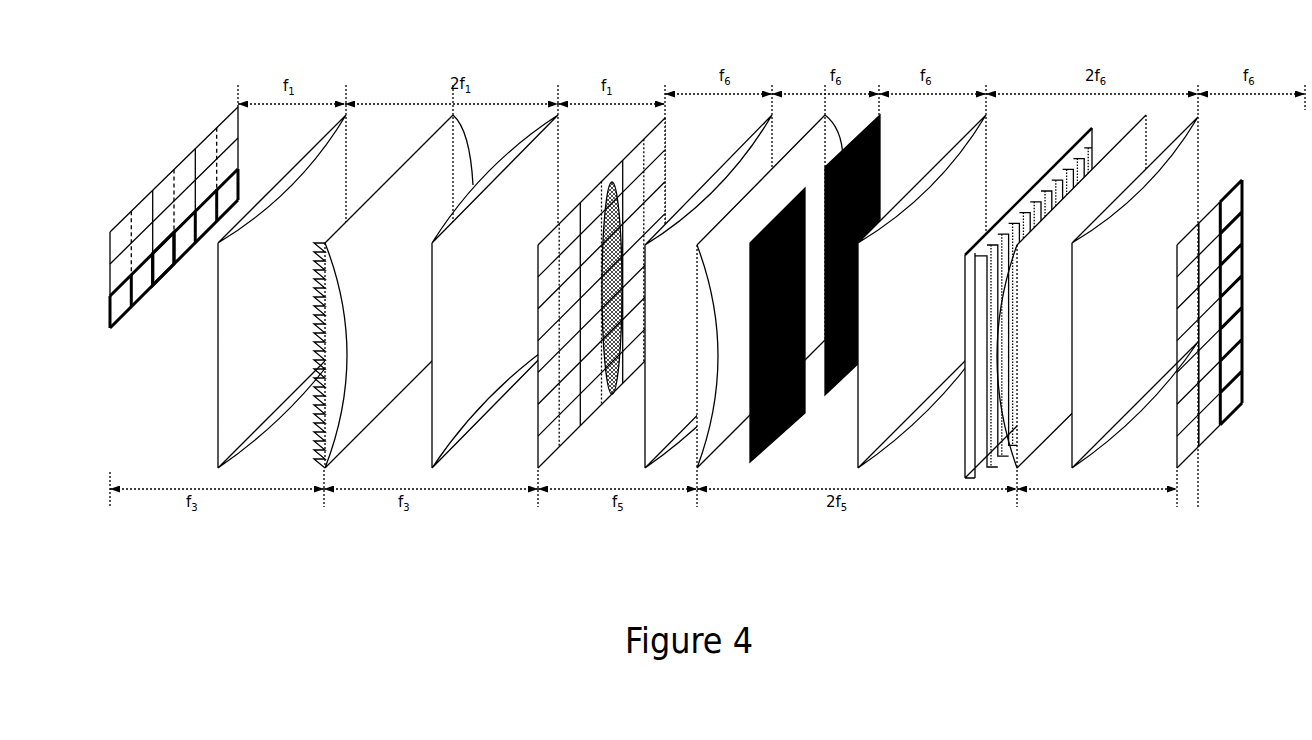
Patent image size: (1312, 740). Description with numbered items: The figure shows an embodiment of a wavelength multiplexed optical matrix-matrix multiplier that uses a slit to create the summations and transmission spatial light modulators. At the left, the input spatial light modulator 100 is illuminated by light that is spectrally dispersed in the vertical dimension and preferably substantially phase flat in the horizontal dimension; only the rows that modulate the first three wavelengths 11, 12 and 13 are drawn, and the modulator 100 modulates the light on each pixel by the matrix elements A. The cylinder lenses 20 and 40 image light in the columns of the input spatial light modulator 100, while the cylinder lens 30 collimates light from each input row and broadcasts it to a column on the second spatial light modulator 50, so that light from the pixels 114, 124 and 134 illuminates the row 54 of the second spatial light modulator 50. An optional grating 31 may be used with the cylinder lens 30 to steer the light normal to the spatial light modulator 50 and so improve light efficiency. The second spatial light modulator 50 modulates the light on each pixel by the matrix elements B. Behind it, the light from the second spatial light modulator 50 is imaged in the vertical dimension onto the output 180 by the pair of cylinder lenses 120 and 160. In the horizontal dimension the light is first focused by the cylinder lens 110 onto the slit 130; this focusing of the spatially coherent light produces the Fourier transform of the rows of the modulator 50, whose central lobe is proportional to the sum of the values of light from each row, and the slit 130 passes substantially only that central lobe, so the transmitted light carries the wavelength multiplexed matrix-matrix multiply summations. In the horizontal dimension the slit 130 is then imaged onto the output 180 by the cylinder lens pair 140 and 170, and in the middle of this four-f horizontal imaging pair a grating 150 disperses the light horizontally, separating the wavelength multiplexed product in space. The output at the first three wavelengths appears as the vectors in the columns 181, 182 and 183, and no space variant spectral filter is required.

The input spatial light modulator 100 is at (183, 157).
The first wavelength row 11 is at (240, 122).
The second wavelength row 12 is at (240, 150).
The third wavelength row 13 is at (240, 178).
The pixel 114 is at (163, 194).
The pixel 124 is at (163, 222).
The pixel 134 is at (163, 265).
The cylinder lens 20 is at (250, 446).
The cylinder lens 30 is at (377, 281).
The grating 31 is at (316, 464).
The cylinder lens 40 is at (461, 452).
The second spatial light modulator 50 is at (567, 440).
The row of the second spatial light modulator 54 is at (613, 395).
The cylinder lens 110 is at (718, 171).
The cylinder lens 120 is at (716, 447).
The slit 130 is at (779, 445).
The cylinder lens 140 is at (909, 445).
The grating 150 is at (1060, 158).
The cylinder lens 160 is at (1040, 447).
The cylinder lens 170 is at (1112, 447).
The output 180 is at (1225, 329).
The output column 181 is at (1183, 462).
The output column 182 is at (1207, 440).
The output column 183 is at (1230, 418).